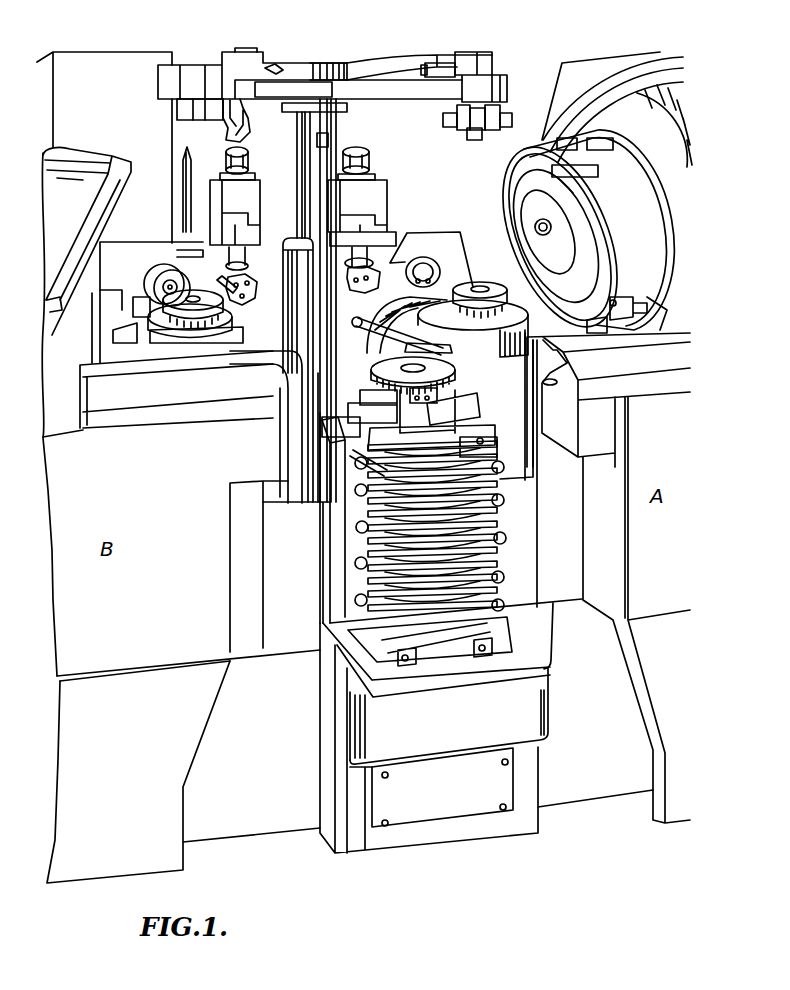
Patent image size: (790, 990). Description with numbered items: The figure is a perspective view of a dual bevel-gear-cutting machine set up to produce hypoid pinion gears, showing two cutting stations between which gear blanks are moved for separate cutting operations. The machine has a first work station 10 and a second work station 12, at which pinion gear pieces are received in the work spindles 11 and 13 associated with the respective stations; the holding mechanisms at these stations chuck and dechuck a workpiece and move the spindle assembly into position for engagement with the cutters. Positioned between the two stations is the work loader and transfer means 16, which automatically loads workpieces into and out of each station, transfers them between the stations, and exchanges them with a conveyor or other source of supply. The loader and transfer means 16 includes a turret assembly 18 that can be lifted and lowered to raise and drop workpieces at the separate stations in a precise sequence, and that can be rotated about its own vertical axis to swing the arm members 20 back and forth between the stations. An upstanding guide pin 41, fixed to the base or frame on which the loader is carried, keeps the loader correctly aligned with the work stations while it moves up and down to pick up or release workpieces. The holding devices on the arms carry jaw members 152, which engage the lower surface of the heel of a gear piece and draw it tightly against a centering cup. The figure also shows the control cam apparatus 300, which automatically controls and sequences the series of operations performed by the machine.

The work loader and transfer means 16 is at (352, 54).
The arm members 20 is at (511, 69).
The turret assembly 18 is at (357, 131).
The jaw members 152 is at (247, 138).
The guide pin 41 is at (185, 195).
The second work station 12 is at (181, 288).
The work spindle 13 is at (187, 317).
The first work station 10 is at (510, 266).
The work spindle 11 is at (510, 296).
The control cam apparatus 300 is at (340, 541).